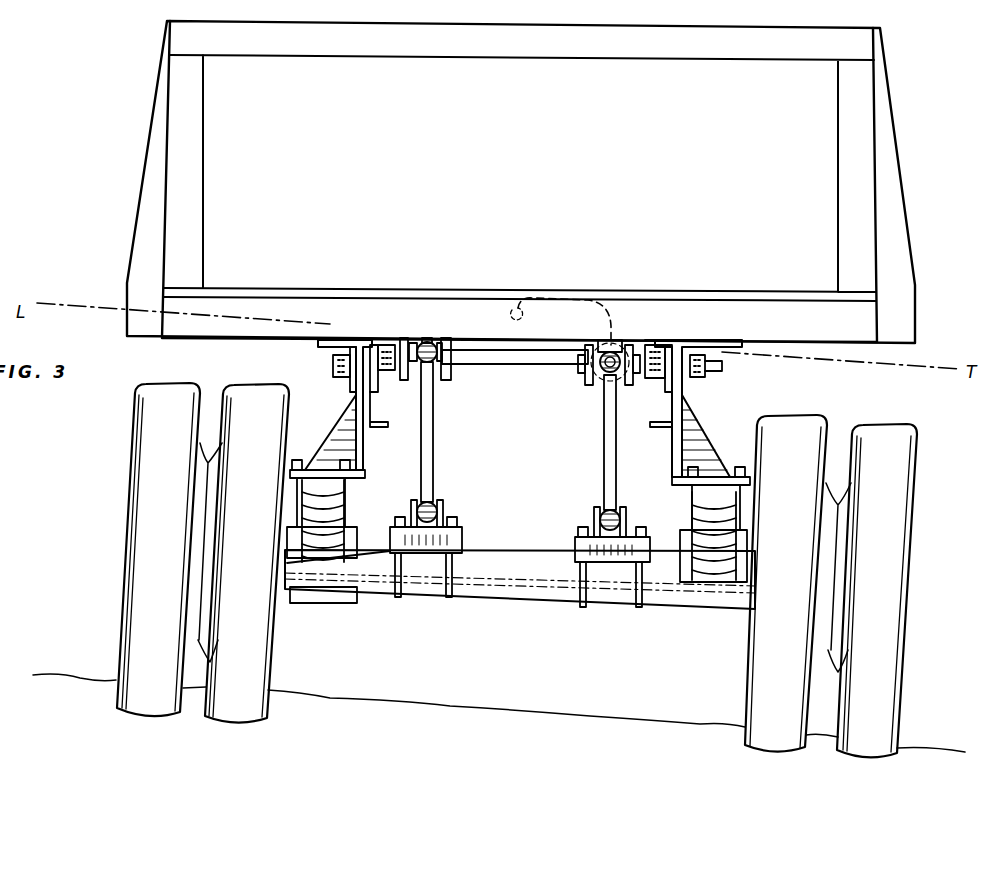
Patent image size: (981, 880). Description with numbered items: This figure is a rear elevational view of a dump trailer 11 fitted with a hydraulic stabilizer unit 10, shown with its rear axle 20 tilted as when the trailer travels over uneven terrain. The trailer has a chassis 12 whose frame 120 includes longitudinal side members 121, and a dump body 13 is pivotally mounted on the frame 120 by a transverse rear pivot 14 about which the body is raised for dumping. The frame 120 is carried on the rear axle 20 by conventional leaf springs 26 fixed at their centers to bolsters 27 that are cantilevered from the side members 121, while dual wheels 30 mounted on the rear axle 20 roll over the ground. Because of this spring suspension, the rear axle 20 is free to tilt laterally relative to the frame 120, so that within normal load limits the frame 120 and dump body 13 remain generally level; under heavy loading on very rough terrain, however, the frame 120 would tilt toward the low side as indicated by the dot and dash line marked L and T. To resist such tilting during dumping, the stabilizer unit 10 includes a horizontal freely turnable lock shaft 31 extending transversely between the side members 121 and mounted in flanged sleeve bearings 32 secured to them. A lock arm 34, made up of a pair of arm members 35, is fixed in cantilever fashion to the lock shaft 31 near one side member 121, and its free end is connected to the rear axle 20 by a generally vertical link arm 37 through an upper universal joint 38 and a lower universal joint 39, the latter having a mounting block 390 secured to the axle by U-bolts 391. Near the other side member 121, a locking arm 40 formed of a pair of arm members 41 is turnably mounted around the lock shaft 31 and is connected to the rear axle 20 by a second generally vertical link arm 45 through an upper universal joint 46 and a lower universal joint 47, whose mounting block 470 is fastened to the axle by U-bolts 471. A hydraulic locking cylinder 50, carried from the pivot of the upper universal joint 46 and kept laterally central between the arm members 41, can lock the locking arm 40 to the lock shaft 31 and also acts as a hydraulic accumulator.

The hydraulic stabilizer unit 10 is at (488, 350).
The dump trailer 11 is at (898, 146).
The chassis 12 is at (698, 427).
The dump body 13 is at (182, 119).
The transverse rear pivot 14 is at (333, 366).
The rear axle 20 is at (518, 592).
The leaf springs 26 is at (318, 526).
The bolsters 27 is at (305, 468).
The dual wheels 30 is at (150, 705).
The lock shaft 31 is at (522, 360).
The flanged sleeve bearings 32 is at (378, 350).
The lock arm 34 is at (420, 345).
The arm members 35 is at (404, 380).
The link arm 37 is at (434, 422).
The upper universal joint 38 is at (430, 344).
The lower universal joint 39 is at (432, 504).
The locking arm 40 is at (594, 345).
The arm members 41 is at (584, 372).
The link arm 45 is at (606, 464).
The upper universal joint 46 is at (607, 374).
The lower universal joint 47 is at (606, 510).
The hydraulic locking cylinder 50 is at (618, 344).
The frame 120 is at (690, 326).
The side members 121 is at (380, 428).
The mounting block 390 is at (462, 540).
The U-bolts 391 is at (449, 598).
The mounting block 470 is at (575, 548).
The U-bolts 471 is at (638, 607).